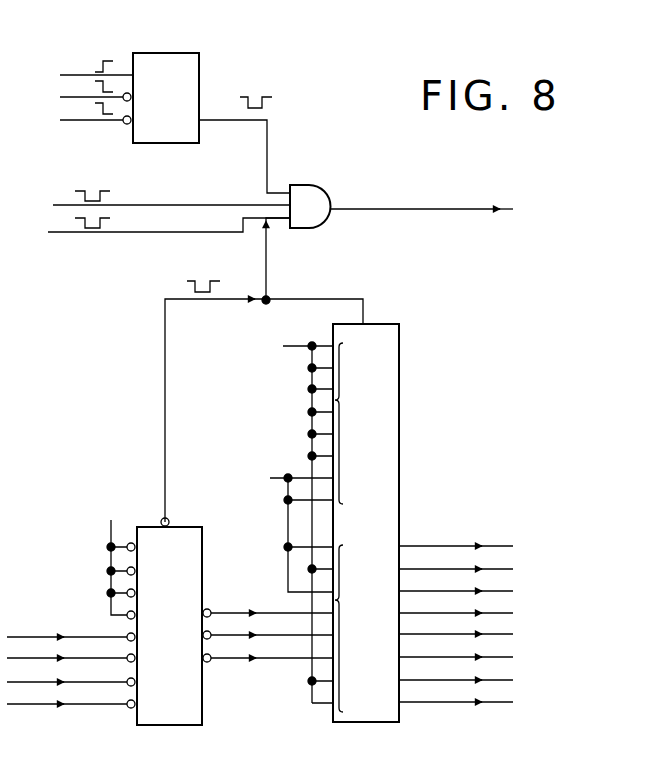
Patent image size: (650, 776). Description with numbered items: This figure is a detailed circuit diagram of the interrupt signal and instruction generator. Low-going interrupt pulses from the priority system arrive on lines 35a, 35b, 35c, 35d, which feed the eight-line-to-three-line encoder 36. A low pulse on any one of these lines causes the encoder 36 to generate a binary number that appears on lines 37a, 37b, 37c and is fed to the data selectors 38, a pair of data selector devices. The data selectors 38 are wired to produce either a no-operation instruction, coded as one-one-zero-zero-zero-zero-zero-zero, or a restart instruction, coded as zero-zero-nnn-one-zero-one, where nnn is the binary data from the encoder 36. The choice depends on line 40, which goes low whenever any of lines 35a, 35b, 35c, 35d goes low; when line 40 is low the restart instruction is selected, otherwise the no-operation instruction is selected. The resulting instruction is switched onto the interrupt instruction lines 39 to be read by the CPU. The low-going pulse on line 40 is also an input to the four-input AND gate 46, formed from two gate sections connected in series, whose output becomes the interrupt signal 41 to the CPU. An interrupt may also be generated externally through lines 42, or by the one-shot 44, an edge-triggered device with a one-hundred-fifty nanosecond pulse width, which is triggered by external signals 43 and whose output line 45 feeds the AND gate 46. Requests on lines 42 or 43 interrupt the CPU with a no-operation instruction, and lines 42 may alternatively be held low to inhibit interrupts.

The one-shot 44 is at (176, 53).
The external signals 43 is at (90, 126).
The one shot output line 45 is at (271, 151).
The lines 42 is at (128, 204).
The 4-input AND gate 46 is at (296, 244).
The interrupt signal 41 is at (428, 208).
The line 40 is at (165, 448).
The data selectors 38 is at (380, 324).
The 8-line-to-3-line encoder 36 is at (168, 725).
The interrupt pulse line 35a is at (35, 637).
The interrupt pulse line 35b is at (80, 658).
The interrupt pulse line 35c is at (30, 682).
The interrupt pulse line 35d is at (82, 704).
The binary data line 37a is at (209, 611).
The binary data line 37b is at (228, 660).
The binary data line 37c is at (265, 660).
The interrupt instruction lines 39 is at (418, 704).